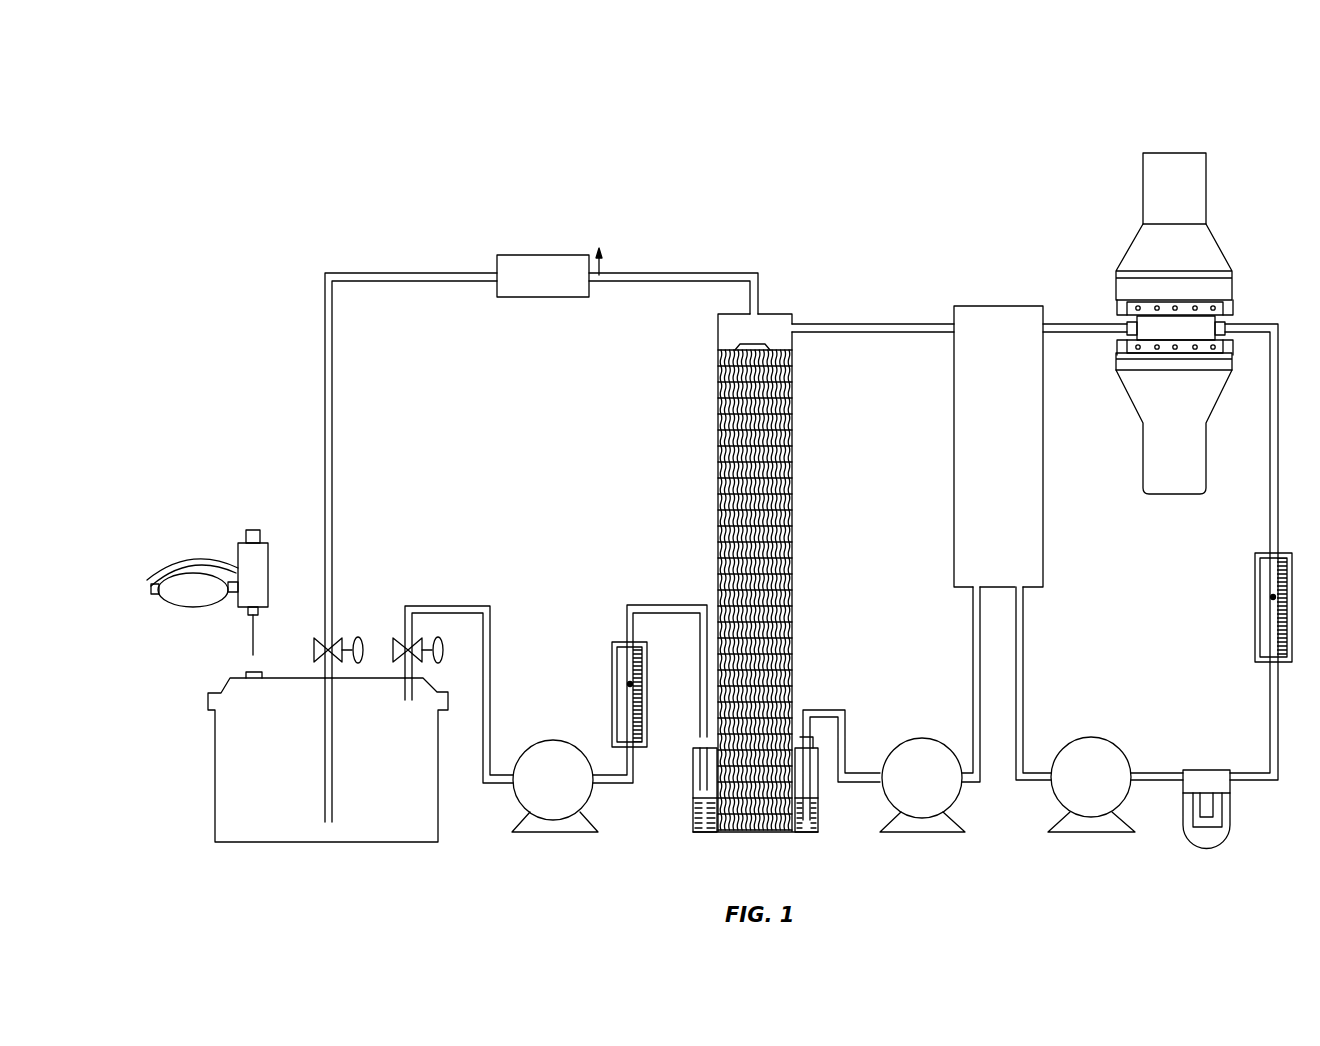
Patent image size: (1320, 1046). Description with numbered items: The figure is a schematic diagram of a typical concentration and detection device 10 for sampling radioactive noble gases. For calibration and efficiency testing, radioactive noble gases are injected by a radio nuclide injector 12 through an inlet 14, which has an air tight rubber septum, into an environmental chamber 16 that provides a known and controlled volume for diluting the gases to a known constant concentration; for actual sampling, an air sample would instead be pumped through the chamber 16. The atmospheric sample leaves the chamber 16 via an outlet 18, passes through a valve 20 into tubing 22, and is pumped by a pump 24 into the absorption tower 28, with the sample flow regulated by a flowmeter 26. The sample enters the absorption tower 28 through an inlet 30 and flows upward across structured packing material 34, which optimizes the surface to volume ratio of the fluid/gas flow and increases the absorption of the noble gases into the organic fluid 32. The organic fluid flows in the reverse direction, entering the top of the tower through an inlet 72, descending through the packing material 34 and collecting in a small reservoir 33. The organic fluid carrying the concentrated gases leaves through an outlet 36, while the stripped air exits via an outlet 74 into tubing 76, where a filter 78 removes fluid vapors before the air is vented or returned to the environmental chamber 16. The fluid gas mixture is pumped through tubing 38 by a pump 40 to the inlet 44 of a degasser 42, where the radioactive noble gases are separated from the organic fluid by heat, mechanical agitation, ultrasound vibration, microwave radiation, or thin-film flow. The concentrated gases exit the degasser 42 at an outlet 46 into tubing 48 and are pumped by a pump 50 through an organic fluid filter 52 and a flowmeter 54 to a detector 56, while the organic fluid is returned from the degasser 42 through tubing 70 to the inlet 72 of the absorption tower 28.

The concentration and detection device 10 is at (820, 135).
The radio nuclide injector 12 is at (186, 562).
The inlet 14 is at (244, 674).
The environmental chamber 16 is at (302, 843).
The outlet 18 is at (408, 702).
The valve 20 is at (393, 636).
The tubing 22 is at (440, 606).
The pump 24 is at (566, 832).
The flowmeter 26 is at (612, 660).
The absorption tower 28 is at (717, 403).
The inlet 30 is at (700, 742).
The organic fluid 32 is at (707, 833).
The small reservoir 33 is at (706, 773).
The structured packing material 34 is at (775, 468).
The outlet 36 is at (818, 745).
The tubing 38 is at (812, 712).
The pump 40 is at (900, 832).
The degasser 42 is at (988, 306).
The inlet 44 is at (972, 590).
The outlet 46 is at (1022, 588).
The tubing 48 is at (1019, 694).
The pump 50 is at (1073, 830).
The organic fluid filter 52 is at (1230, 828).
The flowmeter 54 is at (1255, 638).
The detector 56 is at (1165, 152).
The tubing 70 is at (865, 324).
The inlet 72 is at (792, 324).
The outlet 74 is at (763, 312).
The tubing 76 is at (658, 273).
The filter 78 is at (537, 255).